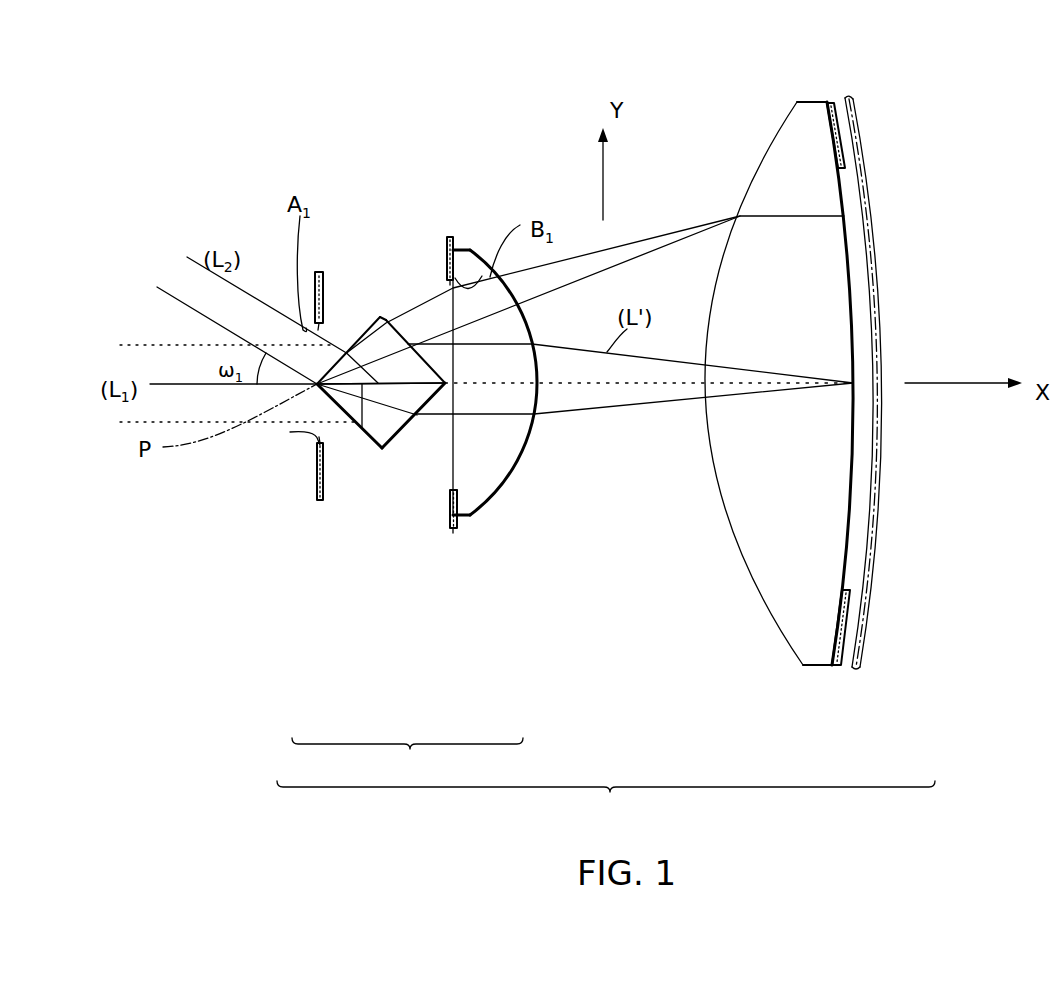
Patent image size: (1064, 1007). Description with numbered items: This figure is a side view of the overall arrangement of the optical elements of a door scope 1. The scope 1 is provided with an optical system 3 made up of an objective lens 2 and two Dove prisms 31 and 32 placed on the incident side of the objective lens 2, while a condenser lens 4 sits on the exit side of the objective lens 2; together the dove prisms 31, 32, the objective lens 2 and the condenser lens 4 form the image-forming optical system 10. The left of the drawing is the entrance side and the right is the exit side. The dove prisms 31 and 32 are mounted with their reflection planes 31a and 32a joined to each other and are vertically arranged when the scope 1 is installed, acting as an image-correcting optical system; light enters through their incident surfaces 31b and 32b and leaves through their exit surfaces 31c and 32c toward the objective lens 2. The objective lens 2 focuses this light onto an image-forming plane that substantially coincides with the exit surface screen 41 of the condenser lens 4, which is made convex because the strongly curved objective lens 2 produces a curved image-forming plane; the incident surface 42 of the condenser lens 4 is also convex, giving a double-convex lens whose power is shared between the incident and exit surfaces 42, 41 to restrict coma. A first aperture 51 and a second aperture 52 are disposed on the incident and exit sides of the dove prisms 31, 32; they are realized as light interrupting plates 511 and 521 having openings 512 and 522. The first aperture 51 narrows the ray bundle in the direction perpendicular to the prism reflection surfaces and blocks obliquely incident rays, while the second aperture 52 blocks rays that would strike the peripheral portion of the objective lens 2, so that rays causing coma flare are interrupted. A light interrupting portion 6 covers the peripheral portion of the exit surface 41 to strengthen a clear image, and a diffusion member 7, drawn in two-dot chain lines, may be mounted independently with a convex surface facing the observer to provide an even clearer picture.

The scope 1 is at (406, 148).
The objective lens 2 is at (471, 252).
The optical system 3 is at (407, 760).
The dove prism 31 is at (386, 270).
The reflection plane 31a is at (424, 358).
The incident surface 31b is at (354, 346).
The exit surface 31c is at (383, 321).
The dove prism 32 is at (367, 543).
The reflection plane 32a is at (363, 437).
The incident surface 32b is at (353, 422).
The exit surface 32c is at (400, 429).
The condenser lens 4 is at (821, 341).
The exit surface screen 41 is at (853, 455).
The incident surface 42 is at (765, 147).
The light interrupting portion 6 is at (845, 137).
The diffusion member 7 is at (877, 260).
The image-forming optical system 10 is at (606, 804).
The first aperture 51 is at (220, 496).
The light interrupting plate 511 is at (313, 456).
The opening 512 is at (290, 432).
The second aperture 52 is at (480, 596).
The light interrupting plate 521 is at (460, 522).
The opening 522 is at (452, 500).